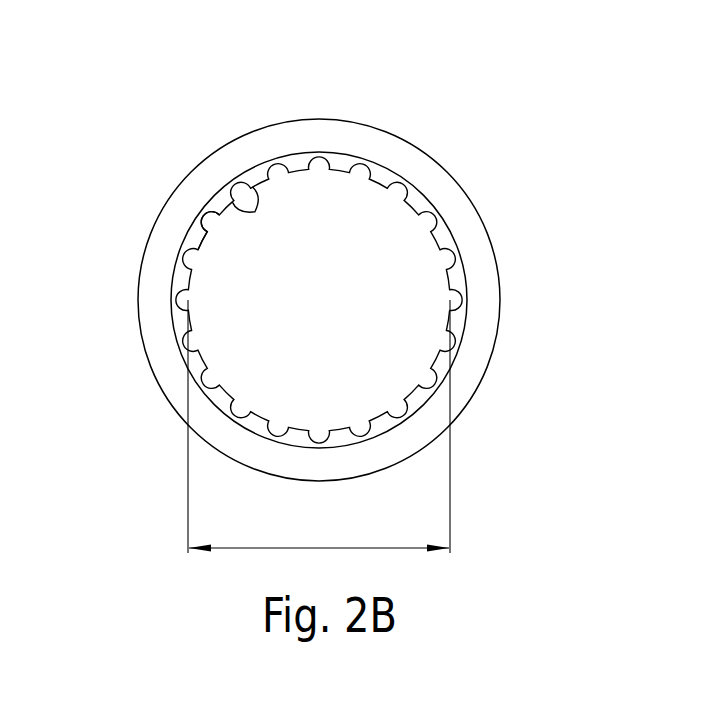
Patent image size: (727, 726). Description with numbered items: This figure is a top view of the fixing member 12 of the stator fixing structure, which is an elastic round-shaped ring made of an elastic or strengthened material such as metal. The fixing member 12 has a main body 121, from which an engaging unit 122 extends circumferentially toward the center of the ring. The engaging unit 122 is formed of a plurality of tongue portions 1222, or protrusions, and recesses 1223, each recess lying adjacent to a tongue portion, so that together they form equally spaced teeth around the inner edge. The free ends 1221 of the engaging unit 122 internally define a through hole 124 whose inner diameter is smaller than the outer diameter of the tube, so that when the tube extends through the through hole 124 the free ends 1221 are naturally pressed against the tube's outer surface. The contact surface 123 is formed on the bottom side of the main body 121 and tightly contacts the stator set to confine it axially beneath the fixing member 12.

The fixing member 12 is at (493, 181).
The main body 121 is at (502, 300).
The engaging unit 122 is at (447, 275).
The free ends 1221 is at (236, 182).
The tongue portions 1222 is at (203, 236).
The recesses 1223 is at (207, 216).
The contact surface 123 is at (472, 355).
The through hole 124 is at (320, 212).